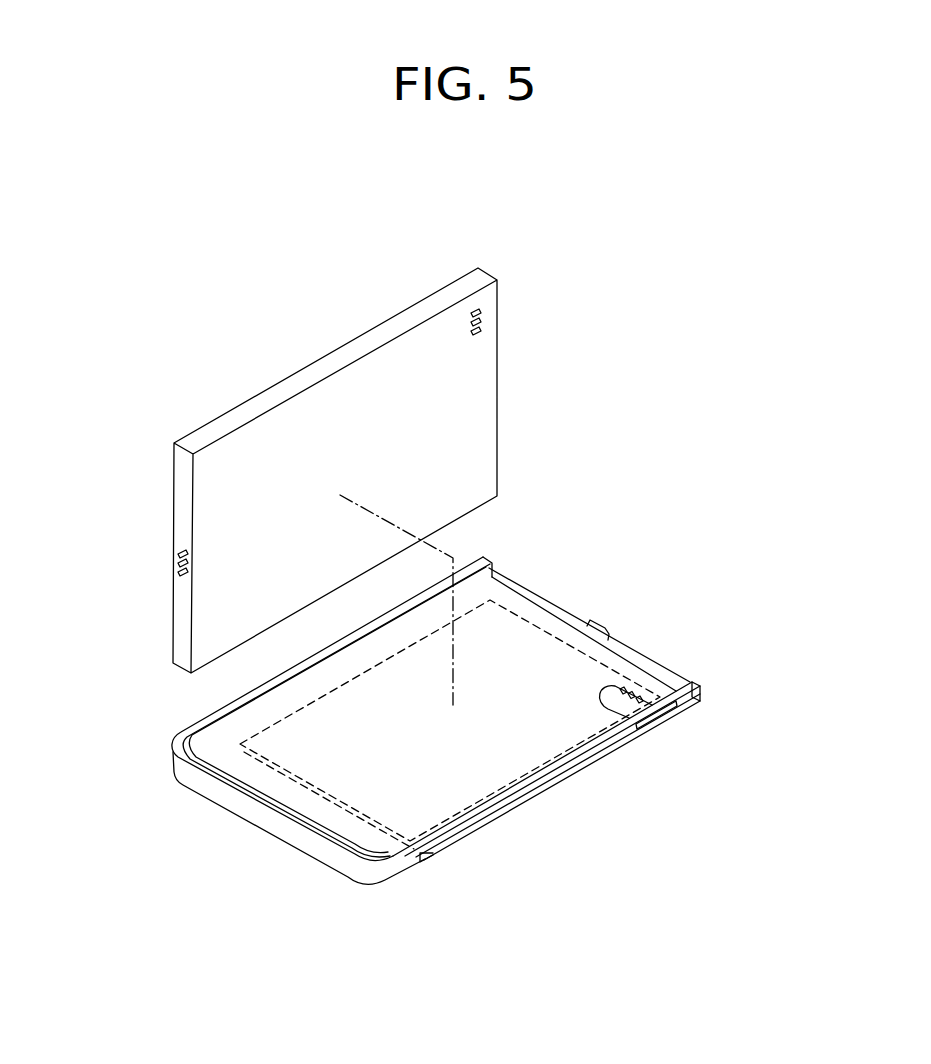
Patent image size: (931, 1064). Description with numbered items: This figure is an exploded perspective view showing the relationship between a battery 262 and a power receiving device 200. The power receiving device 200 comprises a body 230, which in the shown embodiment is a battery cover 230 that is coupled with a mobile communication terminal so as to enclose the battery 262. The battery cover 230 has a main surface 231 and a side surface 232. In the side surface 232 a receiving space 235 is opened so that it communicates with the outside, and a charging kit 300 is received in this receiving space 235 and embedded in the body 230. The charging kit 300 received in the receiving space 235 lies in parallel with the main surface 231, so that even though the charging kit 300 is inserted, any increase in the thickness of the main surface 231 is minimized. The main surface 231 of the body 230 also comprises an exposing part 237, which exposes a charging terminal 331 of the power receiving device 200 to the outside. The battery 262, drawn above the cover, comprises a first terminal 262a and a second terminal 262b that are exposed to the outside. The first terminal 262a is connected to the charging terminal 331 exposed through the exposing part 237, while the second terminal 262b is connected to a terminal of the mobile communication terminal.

The power receiving device 200 is at (553, 583).
The battery cover 230 is at (232, 813).
The main surface 231 is at (227, 742).
The side surface 232 is at (688, 701).
The receiving space 235 is at (437, 856).
The exposing part 237 is at (645, 727).
The battery 262 is at (300, 380).
The first terminal 262a is at (478, 306).
The second terminal 262b is at (177, 559).
The charging kit 300 is at (510, 807).
The charging terminal 331 is at (638, 698).